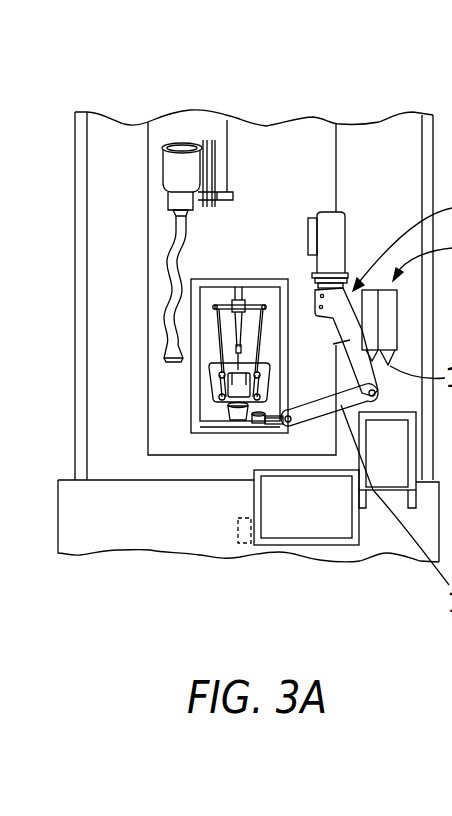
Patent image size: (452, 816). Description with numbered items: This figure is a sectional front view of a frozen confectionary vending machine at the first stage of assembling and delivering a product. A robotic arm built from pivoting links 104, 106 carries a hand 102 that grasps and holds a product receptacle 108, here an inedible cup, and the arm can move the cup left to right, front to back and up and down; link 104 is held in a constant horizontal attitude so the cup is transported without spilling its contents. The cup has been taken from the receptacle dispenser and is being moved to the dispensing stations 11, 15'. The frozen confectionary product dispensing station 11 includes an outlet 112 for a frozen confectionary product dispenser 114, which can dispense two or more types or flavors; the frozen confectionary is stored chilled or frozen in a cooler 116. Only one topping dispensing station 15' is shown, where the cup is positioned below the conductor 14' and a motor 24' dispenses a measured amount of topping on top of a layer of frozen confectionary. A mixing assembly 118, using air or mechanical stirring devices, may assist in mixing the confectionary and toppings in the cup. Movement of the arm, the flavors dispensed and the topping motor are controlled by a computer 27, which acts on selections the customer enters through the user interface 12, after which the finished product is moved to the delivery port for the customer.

The motor 24' is at (197, 121).
The conductor 14' is at (107, 257).
The frozen confectionary product dispenser 114 is at (244, 272).
The mixing assembly 118 is at (238, 354).
The cooler 116 is at (318, 185).
The topping dispensing station 15' is at (147, 364).
The frozen confectionary product dispensing station 11 is at (237, 387).
The outlet 112 is at (222, 398).
The product receptacle 108 is at (222, 422).
The hand 102 is at (259, 415).
The computer 27 is at (238, 545).
The link 104 is at (274, 423).
The link 106 is at (398, 473).
The user interface 12 is at (322, 520).